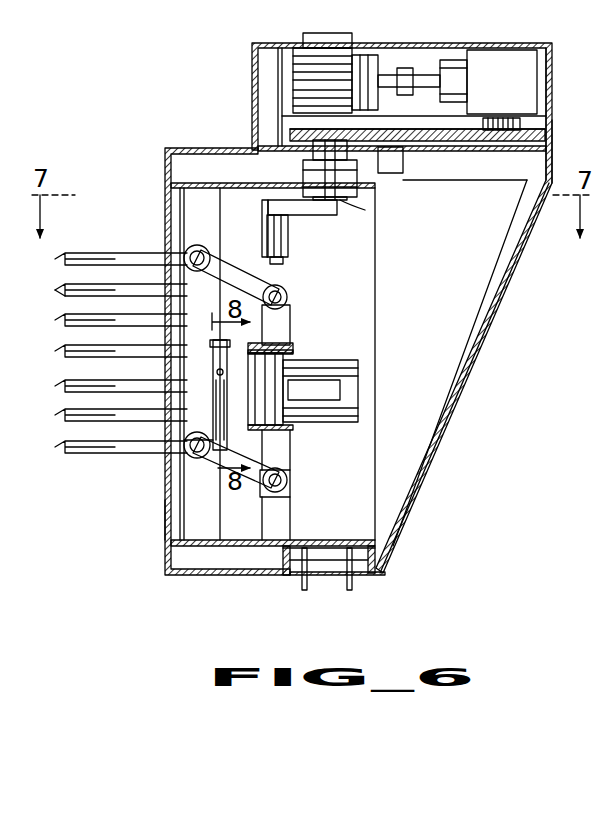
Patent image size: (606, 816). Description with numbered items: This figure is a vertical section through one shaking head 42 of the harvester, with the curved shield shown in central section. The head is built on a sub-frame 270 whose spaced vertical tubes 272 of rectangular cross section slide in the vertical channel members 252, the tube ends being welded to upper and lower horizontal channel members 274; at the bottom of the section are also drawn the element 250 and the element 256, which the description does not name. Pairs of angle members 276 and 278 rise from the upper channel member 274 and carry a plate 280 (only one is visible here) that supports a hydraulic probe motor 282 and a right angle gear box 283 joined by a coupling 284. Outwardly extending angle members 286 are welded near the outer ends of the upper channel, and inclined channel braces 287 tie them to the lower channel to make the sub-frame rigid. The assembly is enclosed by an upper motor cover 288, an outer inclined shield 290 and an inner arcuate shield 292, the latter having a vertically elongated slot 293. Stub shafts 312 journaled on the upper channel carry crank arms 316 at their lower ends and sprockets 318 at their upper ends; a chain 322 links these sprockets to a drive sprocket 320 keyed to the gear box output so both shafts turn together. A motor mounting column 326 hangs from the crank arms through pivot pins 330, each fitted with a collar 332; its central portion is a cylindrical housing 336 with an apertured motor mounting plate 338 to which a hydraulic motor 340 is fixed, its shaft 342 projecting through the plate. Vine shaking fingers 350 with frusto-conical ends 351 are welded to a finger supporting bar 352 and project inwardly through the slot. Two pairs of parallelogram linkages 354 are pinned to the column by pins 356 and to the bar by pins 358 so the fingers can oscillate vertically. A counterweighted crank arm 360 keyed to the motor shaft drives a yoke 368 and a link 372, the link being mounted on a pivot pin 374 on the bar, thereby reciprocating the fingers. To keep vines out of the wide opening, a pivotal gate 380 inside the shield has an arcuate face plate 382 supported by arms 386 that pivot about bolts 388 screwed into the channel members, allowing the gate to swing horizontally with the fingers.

The shaking head 42 is at (190, 95).
The mounting studs 250 is at (357, 582).
The vertical channel member 252 is at (345, 33).
The guide pin 256 is at (305, 588).
The sub-frame 270 is at (532, 233).
The vertically extending tube 272 is at (332, 565).
The horizontal channel member 274 is at (375, 551).
The angle member 276 is at (398, 152).
The angle member 278 is at (258, 50).
The plate 280 is at (446, 55).
The hydraulic probe motor 282 is at (306, 47).
The right angle gear box 283 is at (523, 82).
The coupling 284 is at (481, 89).
The outwardly extending angle member 286 is at (478, 175).
The inclined channel brace 287 is at (472, 343).
The upper motor cover 288 is at (565, 40).
The outer inclined shield 290 is at (500, 305).
The inner arcuate shield 292 is at (190, 200).
The vertically elongated slot 293 is at (167, 520).
The stub shaft 312 is at (370, 218).
The crank arm 316 is at (312, 220).
The sprocket 318 is at (290, 136).
The drive sprocket 320 is at (512, 132).
The chain 322 is at (297, 129).
The motor mounting column 326 is at (290, 325).
The pivot pin 330 is at (288, 272).
The collar 332 is at (290, 253).
The cylindrical housing 336 is at (293, 344).
The motor mounting plate 338 is at (290, 430).
The hydraulic motor 340 is at (360, 385).
The motor shaft 342 is at (314, 389).
The vine shaking finger 350 is at (82, 283).
The frusto-conical end 351 is at (63, 320).
The finger supporting bar 352 is at (190, 448).
The parallelogram linkage 354 is at (290, 290).
The pin 356 is at (290, 303).
The pin 358 is at (195, 252).
The counterweighted crank arm 360 is at (290, 462).
The yoke 368 is at (213, 369).
The link 372 is at (213, 400).
The pivot pin 374 is at (290, 442).
The pivotal gate 380 is at (185, 530).
The arcuate face plate 382 is at (185, 190).
The arm 386 is at (180, 170).
The bolt 388 is at (343, 523).